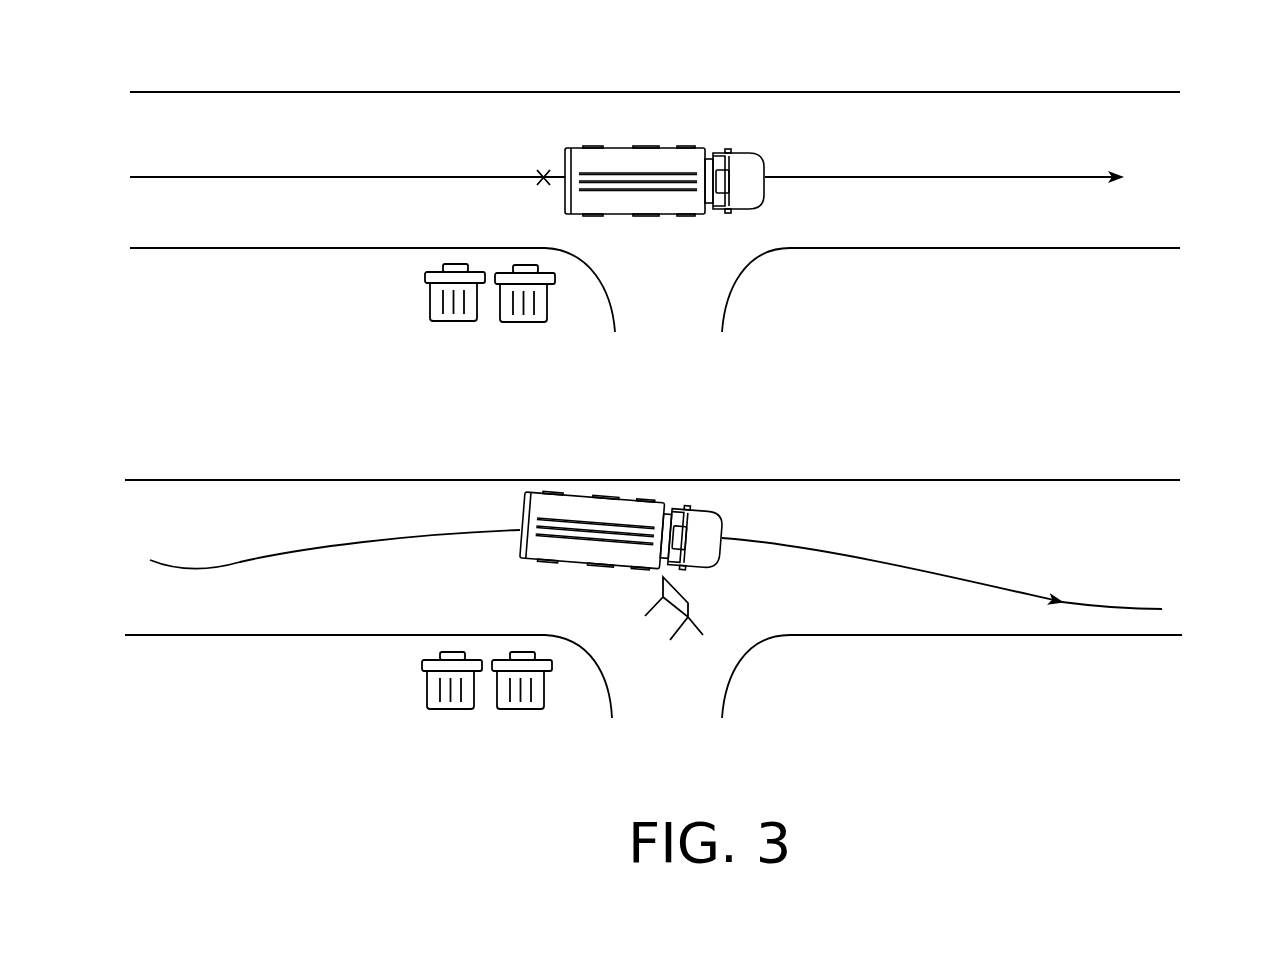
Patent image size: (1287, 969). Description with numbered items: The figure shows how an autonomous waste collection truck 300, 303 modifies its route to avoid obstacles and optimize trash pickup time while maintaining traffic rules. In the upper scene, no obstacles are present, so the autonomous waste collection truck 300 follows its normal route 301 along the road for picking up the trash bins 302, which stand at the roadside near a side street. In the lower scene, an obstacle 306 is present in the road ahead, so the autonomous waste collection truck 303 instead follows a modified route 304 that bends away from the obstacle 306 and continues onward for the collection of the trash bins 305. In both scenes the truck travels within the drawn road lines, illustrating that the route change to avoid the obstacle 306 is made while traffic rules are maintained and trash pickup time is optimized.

The autonomous waste collection truck 300 is at (643, 163).
The normal route 301 is at (330, 178).
The trash bins 302 is at (445, 333).
The autonomous waste collection truck 303 is at (607, 528).
The modified route 304 is at (305, 549).
The trash bins 305 is at (445, 715).
The obstacle 306 is at (672, 626).